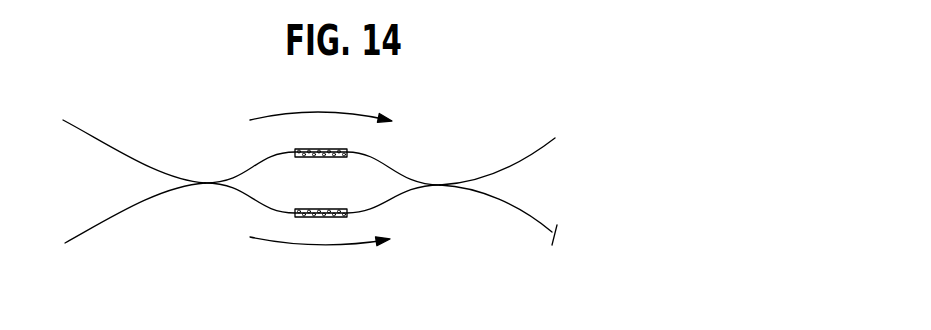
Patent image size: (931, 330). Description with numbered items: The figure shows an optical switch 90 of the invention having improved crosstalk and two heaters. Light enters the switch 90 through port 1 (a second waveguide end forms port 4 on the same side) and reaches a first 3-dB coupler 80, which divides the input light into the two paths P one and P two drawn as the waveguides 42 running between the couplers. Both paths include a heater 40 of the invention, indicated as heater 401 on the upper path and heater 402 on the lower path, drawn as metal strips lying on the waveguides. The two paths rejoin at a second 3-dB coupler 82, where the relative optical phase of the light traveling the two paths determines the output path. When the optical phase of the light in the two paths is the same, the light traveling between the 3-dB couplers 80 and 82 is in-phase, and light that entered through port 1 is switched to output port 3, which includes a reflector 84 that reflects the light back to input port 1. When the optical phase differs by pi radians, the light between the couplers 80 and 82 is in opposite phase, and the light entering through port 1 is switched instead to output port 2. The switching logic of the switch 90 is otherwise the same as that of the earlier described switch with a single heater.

The port 1 is at (126, 221).
The output port 2 is at (506, 149).
The output port 3 is at (499, 229).
The port 4 is at (126, 143).
The waveguide 42 is at (135, 161).
The heater 40 is at (342, 186).
The heater 401 is at (347, 154).
The heater 402 is at (348, 213).
The 3-dB coupler 80 is at (203, 186).
The 3-dB coupler 82 is at (440, 187).
The reflector 84 is at (559, 236).
The optical switch 90 is at (180, 277).